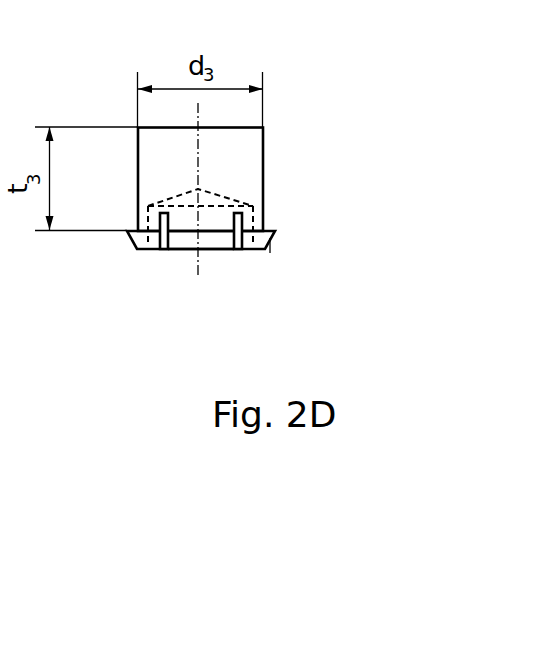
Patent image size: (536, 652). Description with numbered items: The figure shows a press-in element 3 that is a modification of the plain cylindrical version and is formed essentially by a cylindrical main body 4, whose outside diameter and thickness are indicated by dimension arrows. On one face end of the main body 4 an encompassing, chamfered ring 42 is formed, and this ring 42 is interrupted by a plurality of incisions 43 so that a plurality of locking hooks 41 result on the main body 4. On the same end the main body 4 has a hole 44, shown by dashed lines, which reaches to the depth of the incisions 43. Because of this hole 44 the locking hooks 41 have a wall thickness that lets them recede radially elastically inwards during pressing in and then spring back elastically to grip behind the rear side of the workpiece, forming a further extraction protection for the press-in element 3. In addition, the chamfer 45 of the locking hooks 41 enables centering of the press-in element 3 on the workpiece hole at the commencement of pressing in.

The press-in element 3 is at (102, 38).
The main body 4 is at (264, 172).
The locking hook 41 is at (180, 250).
The ring 42 is at (298, 243).
The incision 43 is at (235, 250).
The hole 44 is at (264, 213).
The chamfer 45 is at (272, 242).